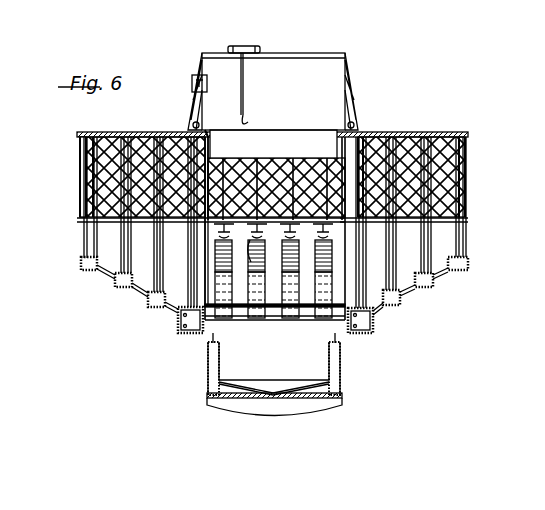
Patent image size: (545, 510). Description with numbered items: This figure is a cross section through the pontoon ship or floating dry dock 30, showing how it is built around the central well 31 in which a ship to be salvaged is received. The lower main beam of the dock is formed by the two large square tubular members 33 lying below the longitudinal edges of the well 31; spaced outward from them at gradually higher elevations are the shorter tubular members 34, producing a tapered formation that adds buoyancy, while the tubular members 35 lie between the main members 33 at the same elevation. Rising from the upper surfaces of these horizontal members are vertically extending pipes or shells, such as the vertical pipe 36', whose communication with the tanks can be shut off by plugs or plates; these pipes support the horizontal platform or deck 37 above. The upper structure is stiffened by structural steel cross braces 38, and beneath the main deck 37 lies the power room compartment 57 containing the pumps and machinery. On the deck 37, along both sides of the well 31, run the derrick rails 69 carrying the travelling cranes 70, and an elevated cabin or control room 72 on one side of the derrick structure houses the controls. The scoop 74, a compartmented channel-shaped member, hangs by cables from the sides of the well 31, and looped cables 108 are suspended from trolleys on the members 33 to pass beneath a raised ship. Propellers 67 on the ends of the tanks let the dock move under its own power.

The pontoon ship 30 is at (470, 181).
The well 31 is at (210, 135).
The tubular members 33 is at (178, 320).
The tubular members 34 is at (148, 300).
The tubular members 35 is at (323, 318).
The vertical pipe 36' is at (364, 271).
The platform or deck 37 is at (421, 134).
The structural steel cross braces 38 is at (95, 180).
The power room compartment 57 is at (296, 145).
The propellers 67 is at (266, 254).
The travelling crane or derrick rails 69 is at (202, 62).
The travelling cranes 70 is at (247, 46).
The cabin or control room 72 is at (192, 85).
The scoop 74 is at (297, 377).
The looped cables 108 is at (207, 382).